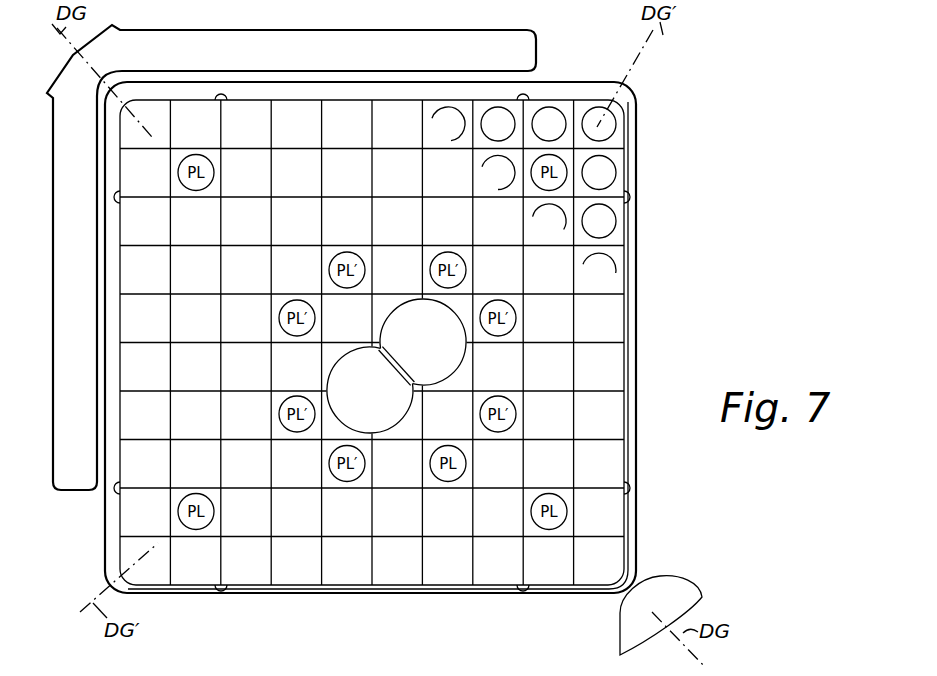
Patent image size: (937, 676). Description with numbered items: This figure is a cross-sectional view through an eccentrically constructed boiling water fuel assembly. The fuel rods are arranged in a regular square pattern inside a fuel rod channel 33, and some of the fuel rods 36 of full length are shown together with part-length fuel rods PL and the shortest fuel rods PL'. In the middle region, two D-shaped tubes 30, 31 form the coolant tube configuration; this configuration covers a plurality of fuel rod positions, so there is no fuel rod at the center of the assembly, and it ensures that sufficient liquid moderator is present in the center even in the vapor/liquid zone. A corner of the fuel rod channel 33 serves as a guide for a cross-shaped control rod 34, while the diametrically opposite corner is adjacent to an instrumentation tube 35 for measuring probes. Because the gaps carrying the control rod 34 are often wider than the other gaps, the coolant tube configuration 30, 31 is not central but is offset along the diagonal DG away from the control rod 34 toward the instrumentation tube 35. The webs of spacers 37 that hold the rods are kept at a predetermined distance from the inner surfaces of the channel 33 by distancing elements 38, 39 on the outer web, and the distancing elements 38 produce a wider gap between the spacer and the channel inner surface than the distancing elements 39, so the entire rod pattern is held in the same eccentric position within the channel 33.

The D-shaped tube 30 is at (448, 352).
The D-shaped tube 31 is at (382, 405).
The fuel rod channel 33 is at (637, 272).
The cross-shaped control rod 34 is at (520, 53).
The instrumentation tube 35 is at (672, 597).
The fuel rod of full length 36 is at (607, 125).
The webs of spacers 37 is at (617, 182).
The distancing element 38 is at (533, 92).
The distancing element 39 is at (635, 500).